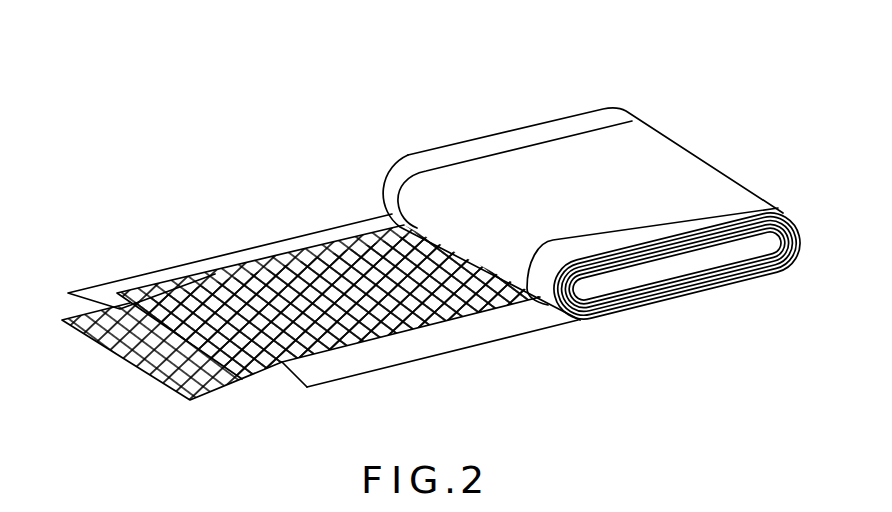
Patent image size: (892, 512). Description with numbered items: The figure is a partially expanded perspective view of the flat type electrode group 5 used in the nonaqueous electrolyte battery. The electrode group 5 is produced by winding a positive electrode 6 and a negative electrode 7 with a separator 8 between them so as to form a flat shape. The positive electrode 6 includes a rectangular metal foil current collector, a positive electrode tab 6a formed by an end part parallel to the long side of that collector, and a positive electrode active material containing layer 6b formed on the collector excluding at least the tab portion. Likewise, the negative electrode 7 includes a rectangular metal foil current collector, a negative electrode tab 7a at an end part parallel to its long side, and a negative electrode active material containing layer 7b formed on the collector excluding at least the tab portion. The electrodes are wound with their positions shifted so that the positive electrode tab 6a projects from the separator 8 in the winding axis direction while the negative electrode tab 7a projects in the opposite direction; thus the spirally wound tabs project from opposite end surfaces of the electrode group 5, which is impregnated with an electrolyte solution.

The electrode group 5 is at (602, 179).
The positive electrode 6 is at (146, 274).
The positive electrode tab 6a is at (558, 130).
The positive electrode active material containing layer 6b is at (122, 304).
The negative electrode 7 is at (430, 371).
The negative electrode tab 7a is at (748, 202).
The negative electrode active material containing layer 7b is at (377, 317).
The separator 8 is at (253, 372).